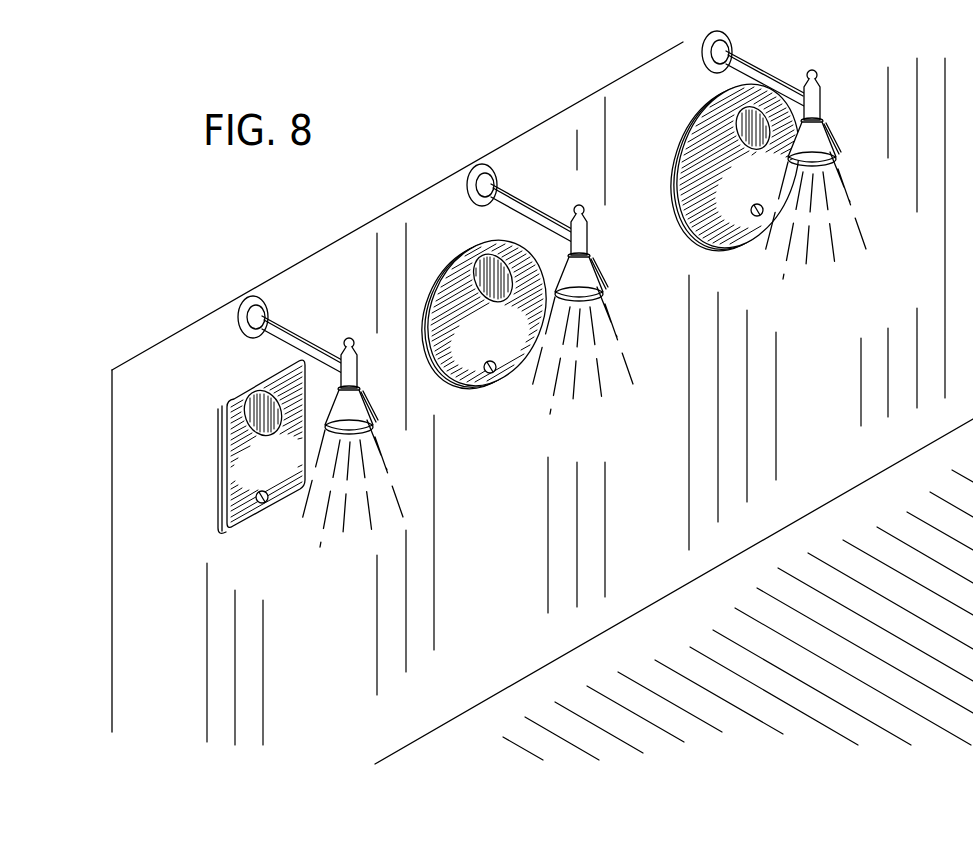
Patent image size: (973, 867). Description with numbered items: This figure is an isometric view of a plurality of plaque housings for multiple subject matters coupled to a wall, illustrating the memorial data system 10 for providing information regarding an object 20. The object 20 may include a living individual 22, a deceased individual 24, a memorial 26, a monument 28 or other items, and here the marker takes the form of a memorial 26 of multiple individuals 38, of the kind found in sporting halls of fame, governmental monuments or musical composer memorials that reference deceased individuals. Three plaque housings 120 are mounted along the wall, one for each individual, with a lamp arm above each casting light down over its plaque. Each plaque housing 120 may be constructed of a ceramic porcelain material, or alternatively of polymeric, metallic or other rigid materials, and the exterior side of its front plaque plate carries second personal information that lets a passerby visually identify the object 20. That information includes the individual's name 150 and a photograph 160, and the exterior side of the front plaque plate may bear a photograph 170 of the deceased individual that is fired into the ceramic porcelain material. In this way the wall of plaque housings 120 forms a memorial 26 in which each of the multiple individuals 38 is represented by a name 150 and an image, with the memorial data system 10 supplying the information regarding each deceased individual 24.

The memorial data system 10 is at (158, 110).
The object 20 is at (142, 138).
The living individual 22 is at (168, 85).
The deceased individual 24 is at (130, 167).
The memorial 26 is at (118, 198).
The monument 28 is at (110, 232).
The multiple individuals 38 is at (188, 63).
The plaque housing 120 is at (232, 393).
The individual's name 150 is at (235, 455).
The photograph 160 is at (267, 393).
The photograph of the deceased individual 170 is at (492, 262).